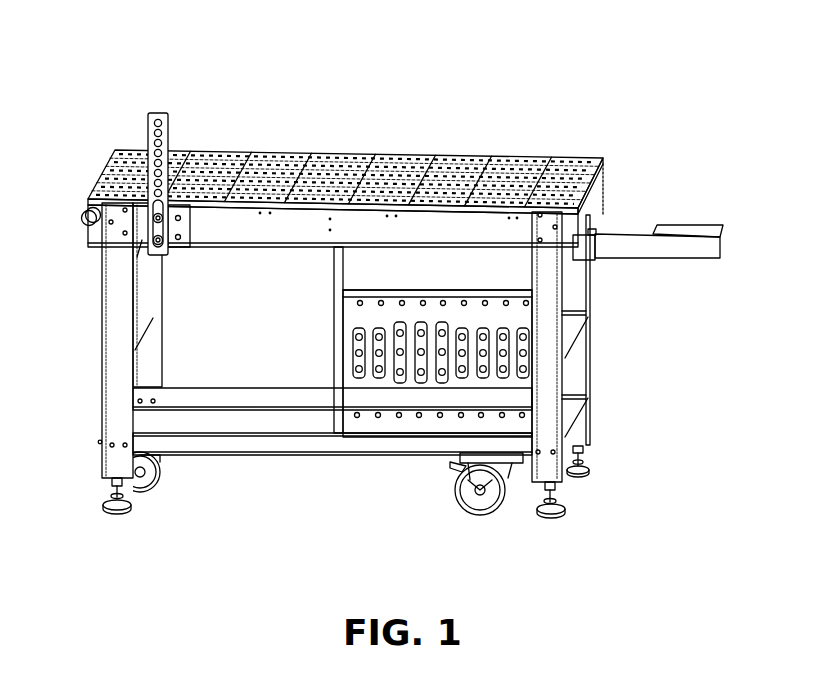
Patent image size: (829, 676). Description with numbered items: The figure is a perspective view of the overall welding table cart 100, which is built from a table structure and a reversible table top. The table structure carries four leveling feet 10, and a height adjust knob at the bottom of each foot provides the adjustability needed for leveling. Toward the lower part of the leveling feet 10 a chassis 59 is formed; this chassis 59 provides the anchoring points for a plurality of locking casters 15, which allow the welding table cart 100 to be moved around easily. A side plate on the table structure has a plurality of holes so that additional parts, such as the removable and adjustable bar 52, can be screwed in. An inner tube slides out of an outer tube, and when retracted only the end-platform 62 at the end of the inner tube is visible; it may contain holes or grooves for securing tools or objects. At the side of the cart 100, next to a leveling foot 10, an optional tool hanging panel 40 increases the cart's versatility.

The welding table cart 100 is at (363, 108).
The leveling feet 10 is at (103, 335).
The locking casters 15 is at (457, 482).
The tool hanging panel 40 is at (380, 393).
The removable and adjustable bar 52 is at (163, 100).
The chassis 59 is at (578, 440).
The end-platform 62 is at (692, 212).